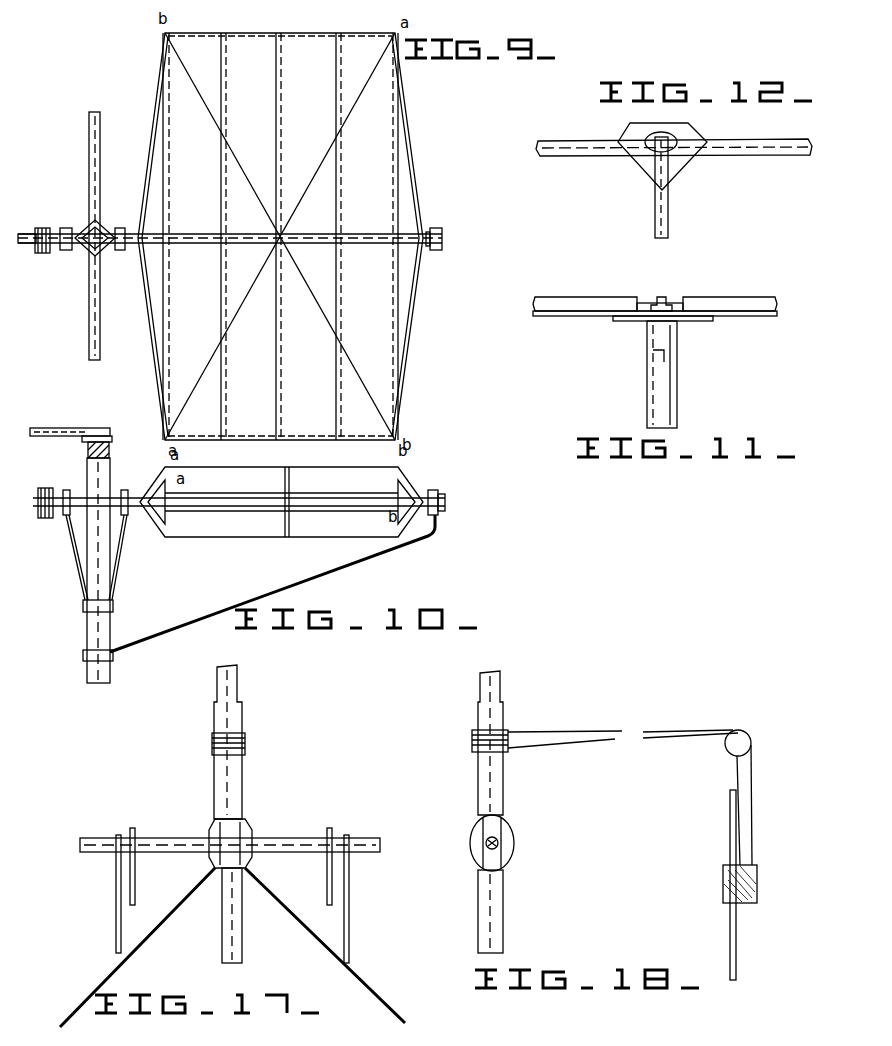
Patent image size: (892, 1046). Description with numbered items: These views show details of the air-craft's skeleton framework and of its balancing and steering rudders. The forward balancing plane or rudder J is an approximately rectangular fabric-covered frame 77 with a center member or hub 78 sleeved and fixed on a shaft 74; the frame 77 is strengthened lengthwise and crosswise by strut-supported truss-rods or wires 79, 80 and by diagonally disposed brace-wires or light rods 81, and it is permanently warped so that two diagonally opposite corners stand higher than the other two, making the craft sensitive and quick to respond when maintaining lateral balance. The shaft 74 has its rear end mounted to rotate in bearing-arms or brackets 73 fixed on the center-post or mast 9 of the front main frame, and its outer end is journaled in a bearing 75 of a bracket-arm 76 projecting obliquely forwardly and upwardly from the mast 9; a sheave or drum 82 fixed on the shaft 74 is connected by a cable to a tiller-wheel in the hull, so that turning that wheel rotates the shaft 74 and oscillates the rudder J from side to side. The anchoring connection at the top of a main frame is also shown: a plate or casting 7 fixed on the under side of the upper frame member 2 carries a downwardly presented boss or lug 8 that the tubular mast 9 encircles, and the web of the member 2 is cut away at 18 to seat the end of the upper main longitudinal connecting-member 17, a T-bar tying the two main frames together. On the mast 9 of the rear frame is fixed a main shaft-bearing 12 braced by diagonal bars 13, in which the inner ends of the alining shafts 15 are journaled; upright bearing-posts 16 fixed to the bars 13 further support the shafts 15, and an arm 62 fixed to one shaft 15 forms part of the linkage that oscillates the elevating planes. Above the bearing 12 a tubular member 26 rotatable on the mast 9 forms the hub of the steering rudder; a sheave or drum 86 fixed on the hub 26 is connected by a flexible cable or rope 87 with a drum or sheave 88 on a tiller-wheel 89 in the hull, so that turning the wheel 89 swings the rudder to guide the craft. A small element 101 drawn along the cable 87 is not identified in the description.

In FIG. 9, the upper member 2 is at (91, 152).
In FIG. 12, the upper member 2 is at (595, 150).
In FIG. 11, the upper member 2 is at (580, 305).
In FIG. 9, the plate or casting 7 is at (102, 230).
In FIG. 10, the plate or casting 7 is at (108, 436).
In FIG. 12, the plate or casting 7 is at (648, 172).
In FIG. 11, the plate or casting 7 is at (632, 320).
In FIG. 10, the boss or lug 8 is at (86, 449).
In FIG. 12, the boss or lug 8 is at (675, 138).
In FIG. 11, the boss or lug 8 is at (675, 358).
In FIG. 10, the center-post or mast 9 is at (96, 633).
In FIG. 12, the center-post or mast 9 is at (640, 140).
In FIG. 11, the center-post or mast 9 is at (662, 392).
In FIG. 17, the center-post or mast 9 is at (232, 937).
In FIG. 18, the center-post or mast 9 is at (495, 915).
In FIG. 17, the main shaft-bearing 12 is at (252, 828).
In FIG. 18, the main shaft-bearing 12 is at (514, 841).
In FIG. 17, the diagonal or oblique members or bars 13 is at (155, 940).
In FIG. 17, the alining shafts 15 is at (178, 845).
In FIG. 18, the alining shafts 15 is at (488, 848).
In FIG. 17, the upright bearing-members or posts 16 is at (116, 915).
In FIG. 9, the upper main longitudinal connecting-member 17 is at (24, 246).
In FIG. 10, the upper main longitudinal connecting-member 17 is at (40, 434).
In FIG. 12, the upper main longitudinal connecting-member 17 is at (658, 228).
In FIG. 11, the upper main longitudinal connecting-member 17 is at (668, 298).
In FIG. 12, the cut-away seat 18 is at (690, 136).
In FIG. 11, the cut-away seat 18 is at (641, 302).
In FIG. 18, the tubular member 26 is at (505, 790).
In FIG. 17, the second arm 62 is at (135, 892).
In FIG. 10, the bearing-arms or brackets 73 is at (72, 560).
In FIG. 9, the shaft 74 is at (120, 252).
In FIG. 10, the shaft 74 is at (128, 490).
In FIG. 9, the bearing 75 is at (440, 250).
In FIG. 10, the bearing 75 is at (445, 492).
In FIG. 10, the bracket-arm 76 is at (376, 556).
In FIG. 9, the frame 77 is at (238, 440).
In FIG. 10, the frame 77 is at (195, 487).
In FIG. 9, the center member or hub 78 is at (364, 247).
In FIG. 9, the truss-rods or wires 79 is at (168, 332).
In FIG. 9, the truss-rods or wires 80 is at (204, 247).
In FIG. 10, the truss-rods or wires 80 is at (321, 465).
In FIG. 9, the diagonally disposed brace-wires or light rods 81 is at (313, 298).
In FIG. 9, the sheave or drum 82 is at (45, 255).
In FIG. 10, the sheave or drum 82 is at (52, 487).
In FIG. 17, the sheave or drum 86 is at (245, 742).
In FIG. 18, the sheave or drum 86 is at (472, 740).
In FIG. 18, the flexible cable or rope 87 is at (580, 733).
In FIG. 18, the drum or sheave 88 is at (757, 885).
In FIG. 18, the tiller-wheel 89 is at (736, 945).
In FIG. 18, the pulley 101 is at (741, 743).
In FIG. 9, the balancing plane or rudder J is at (405, 297).